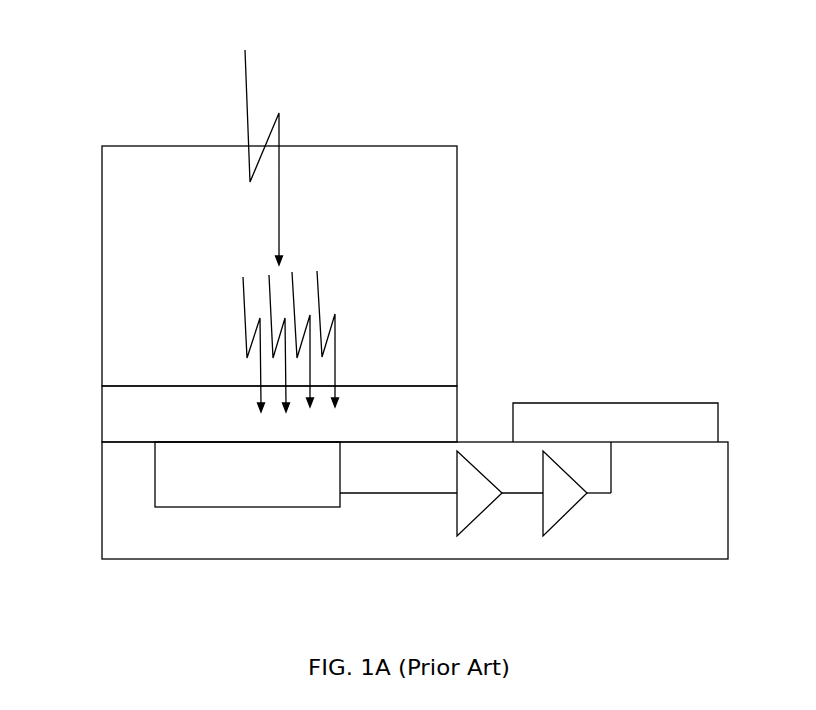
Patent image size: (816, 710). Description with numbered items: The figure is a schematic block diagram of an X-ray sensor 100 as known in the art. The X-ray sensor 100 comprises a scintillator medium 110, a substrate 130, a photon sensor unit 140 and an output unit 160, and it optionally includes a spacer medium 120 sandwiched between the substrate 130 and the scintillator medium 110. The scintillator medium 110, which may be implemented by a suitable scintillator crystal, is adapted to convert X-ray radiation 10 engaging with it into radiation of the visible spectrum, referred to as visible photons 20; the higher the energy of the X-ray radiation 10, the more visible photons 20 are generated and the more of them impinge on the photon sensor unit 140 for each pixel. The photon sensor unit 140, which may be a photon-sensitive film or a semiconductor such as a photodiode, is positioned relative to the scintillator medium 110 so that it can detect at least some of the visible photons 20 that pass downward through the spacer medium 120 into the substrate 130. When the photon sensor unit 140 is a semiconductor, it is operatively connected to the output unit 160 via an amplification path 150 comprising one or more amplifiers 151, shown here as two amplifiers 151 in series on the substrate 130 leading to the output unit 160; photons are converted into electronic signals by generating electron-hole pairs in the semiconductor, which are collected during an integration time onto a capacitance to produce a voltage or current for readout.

The X-ray sensor 100 is at (143, 88).
The X-ray radiation 10 is at (272, 157).
The visible photons 20 is at (313, 341).
The scintillator medium 110 is at (90, 248).
The spacer medium 120 is at (90, 406).
The substrate 130 is at (90, 493).
The photon sensor unit 140 is at (352, 466).
The amplification path 150 is at (630, 498).
The amplifier 151 is at (497, 540).
The output unit 160 is at (558, 380).